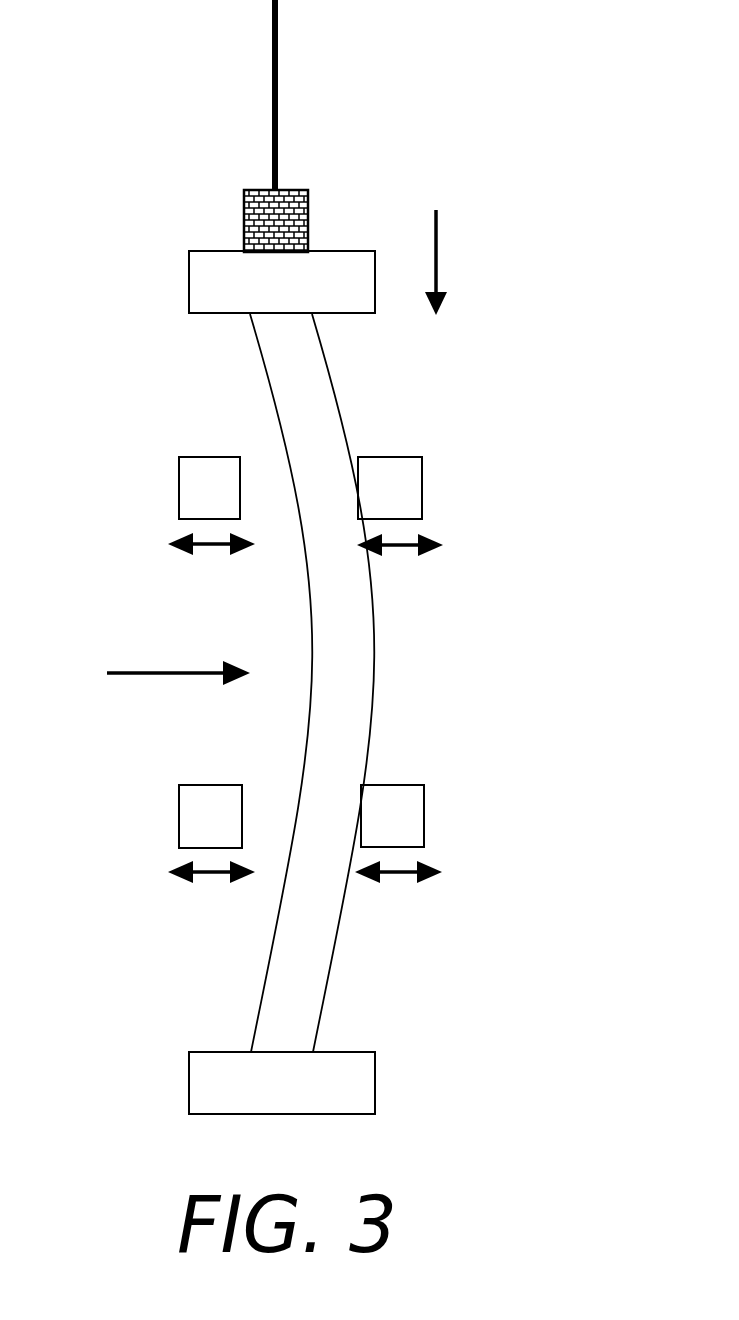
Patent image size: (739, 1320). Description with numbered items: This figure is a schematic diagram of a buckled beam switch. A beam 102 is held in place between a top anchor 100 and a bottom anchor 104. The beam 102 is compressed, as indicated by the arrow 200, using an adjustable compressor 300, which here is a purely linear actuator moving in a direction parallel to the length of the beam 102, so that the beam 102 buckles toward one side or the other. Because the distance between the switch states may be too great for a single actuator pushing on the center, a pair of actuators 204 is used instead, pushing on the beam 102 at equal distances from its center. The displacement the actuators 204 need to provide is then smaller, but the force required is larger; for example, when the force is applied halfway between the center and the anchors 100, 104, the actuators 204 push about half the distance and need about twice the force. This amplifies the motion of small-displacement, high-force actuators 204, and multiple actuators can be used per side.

The top anchor 100 is at (189, 286).
The beam 102 is at (375, 662).
The bottom anchor 104 is at (189, 1087).
The compression arrows 200 is at (437, 258).
The actuators 204 is at (179, 488).
The adjustable compressor 300 is at (243, 215).